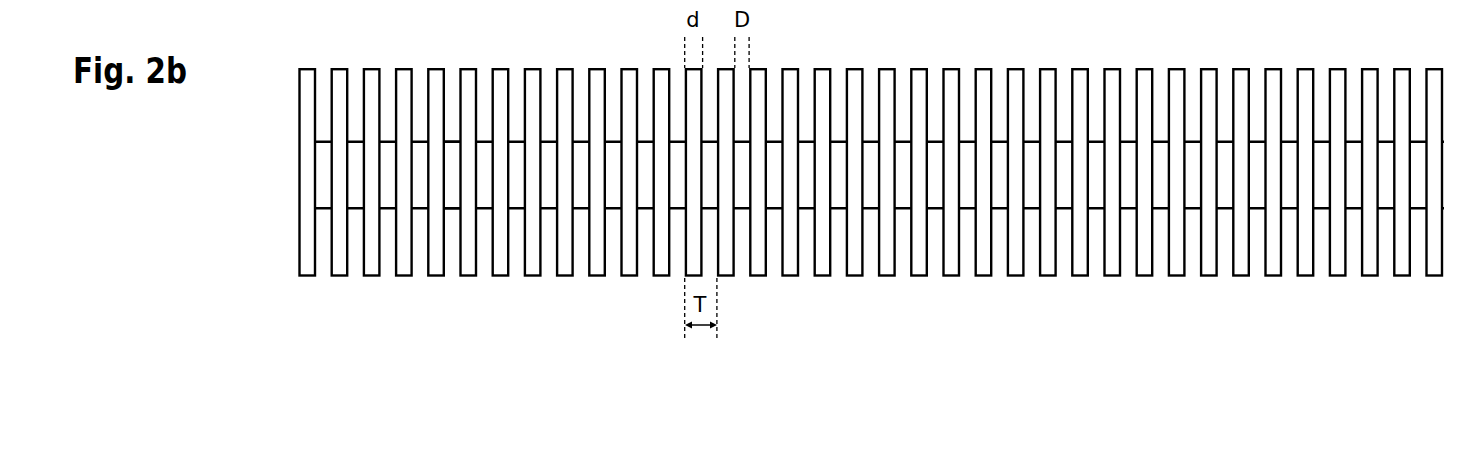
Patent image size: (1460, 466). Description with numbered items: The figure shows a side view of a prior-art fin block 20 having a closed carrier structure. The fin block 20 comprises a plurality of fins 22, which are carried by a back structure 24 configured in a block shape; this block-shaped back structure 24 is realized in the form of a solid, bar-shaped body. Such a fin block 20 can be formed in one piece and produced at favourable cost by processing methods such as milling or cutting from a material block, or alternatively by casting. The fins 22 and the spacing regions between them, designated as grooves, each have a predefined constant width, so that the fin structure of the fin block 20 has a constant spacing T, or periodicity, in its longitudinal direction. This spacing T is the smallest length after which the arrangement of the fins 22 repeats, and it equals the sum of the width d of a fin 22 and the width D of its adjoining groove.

The fin block 20 is at (1342, 175).
The fin 22 is at (339, 257).
The back structure 24 is at (450, 178).